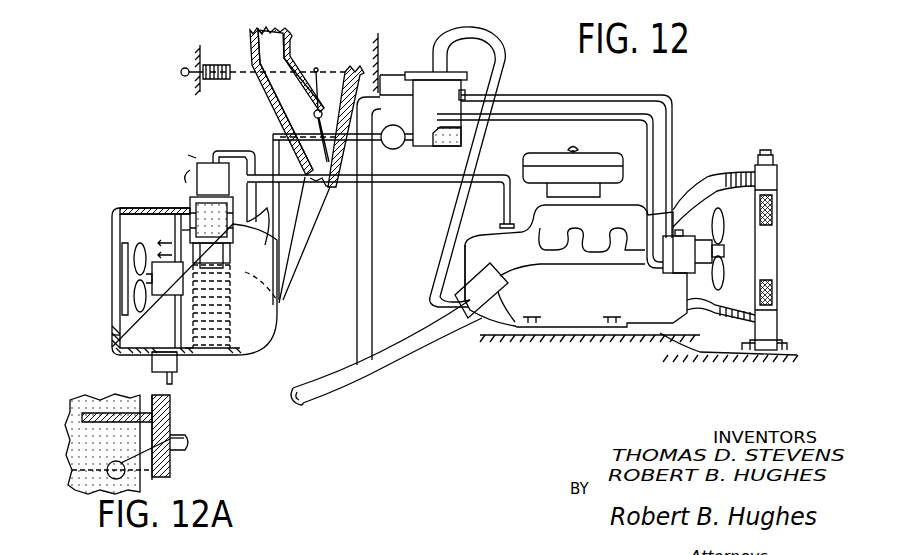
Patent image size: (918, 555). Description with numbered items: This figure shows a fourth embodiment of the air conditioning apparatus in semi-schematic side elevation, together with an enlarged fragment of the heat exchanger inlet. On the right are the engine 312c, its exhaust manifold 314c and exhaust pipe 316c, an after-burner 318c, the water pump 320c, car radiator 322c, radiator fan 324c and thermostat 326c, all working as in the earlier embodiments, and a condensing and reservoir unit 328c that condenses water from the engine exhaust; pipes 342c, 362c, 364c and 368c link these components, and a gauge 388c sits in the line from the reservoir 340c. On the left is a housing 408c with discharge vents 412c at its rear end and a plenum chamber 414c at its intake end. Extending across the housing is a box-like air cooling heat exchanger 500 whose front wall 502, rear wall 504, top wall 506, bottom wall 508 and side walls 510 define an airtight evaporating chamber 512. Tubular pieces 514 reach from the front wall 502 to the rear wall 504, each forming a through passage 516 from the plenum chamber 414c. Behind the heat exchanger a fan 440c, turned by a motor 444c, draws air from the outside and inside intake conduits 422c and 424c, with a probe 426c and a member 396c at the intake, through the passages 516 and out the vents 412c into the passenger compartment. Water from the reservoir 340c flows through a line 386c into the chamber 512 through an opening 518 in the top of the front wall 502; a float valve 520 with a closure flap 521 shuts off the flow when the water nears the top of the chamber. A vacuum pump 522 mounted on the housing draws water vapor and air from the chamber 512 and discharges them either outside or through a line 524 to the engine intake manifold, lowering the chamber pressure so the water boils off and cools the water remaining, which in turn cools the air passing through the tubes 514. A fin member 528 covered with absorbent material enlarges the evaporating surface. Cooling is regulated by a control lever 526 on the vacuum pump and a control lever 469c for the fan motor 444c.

In FIG. 12, the engine 312c is at (612, 295).
In FIG. 12, the exhaust manifold 314c is at (545, 268).
In FIG. 12, the exhaust pipe 316c is at (389, 380).
In FIG. 12, the after-burner 318c is at (476, 340).
In FIG. 12, the water pump 320c is at (677, 266).
In FIG. 12, the car radiator 322c is at (772, 246).
In FIG. 12, the radiator fan 324c is at (722, 218).
In FIG. 12, the thermostat 326c is at (725, 180).
In FIG. 12, the condensing and reservoir unit 328c is at (423, 85).
In FIG. 12, the reservoir 340c is at (465, 135).
In FIG. 12, the loop conduit 342c is at (497, 56).
In FIG. 12, the coolant line 362c is at (548, 112).
In FIG. 12, the coolant return line 364c is at (582, 95).
In FIG. 12, the conduit 368c is at (376, 229).
In FIG. 12, the line 386c is at (226, 160).
In FIG. 12A, the line 386c is at (187, 441).
In FIG. 12, the valve gauge 388c is at (393, 149).
In FIG. 12, the conduit 396c is at (336, 200).
In FIG. 12, the housing 408c is at (243, 356).
In FIG. 12, the discharge vents 412c is at (112, 278).
In FIG. 12, the plenum chamber 414c is at (254, 214).
In FIG. 12, the outside intake conduit 422c is at (338, 70).
In FIG. 12, the inside intake conduit 424c is at (290, 37).
In FIG. 12, the probe 426c is at (308, 257).
In FIG. 12, the fan 440c is at (112, 340).
In FIG. 12, the motor 444c is at (152, 362).
In FIG. 12, the control lever 469c is at (175, 384).
In FIG. 12, the air cooling heat exchanger 500 is at (277, 290).
In FIG. 12, the front wall 502 is at (242, 270).
In FIG. 12A, the front wall 502 is at (170, 463).
In FIG. 12, the rear wall 504 is at (193, 217).
In FIG. 12, the top wall 506 is at (186, 183).
In FIG. 12, the bottom wall 508 is at (203, 356).
In FIG. 12, the side walls 510 is at (188, 302).
In FIG. 12, the evaporating chamber 512 is at (232, 256).
In FIG. 12, the tubular pieces 514 is at (226, 334).
In FIG. 12, the through passage 516 is at (168, 232).
In FIG. 12A, the opening 518 is at (186, 444).
In FIG. 12A, the float valve 520 is at (112, 458).
In FIG. 12A, the closure flap 521 is at (145, 444).
In FIG. 12, the vacuum pump 522 is at (203, 160).
In FIG. 12, the line 524 is at (427, 183).
In FIG. 12, the control lever 526 is at (188, 155).
In FIG. 12, the fin member 528 is at (210, 235).
In FIG. 12A, the fin member 528 is at (92, 480).